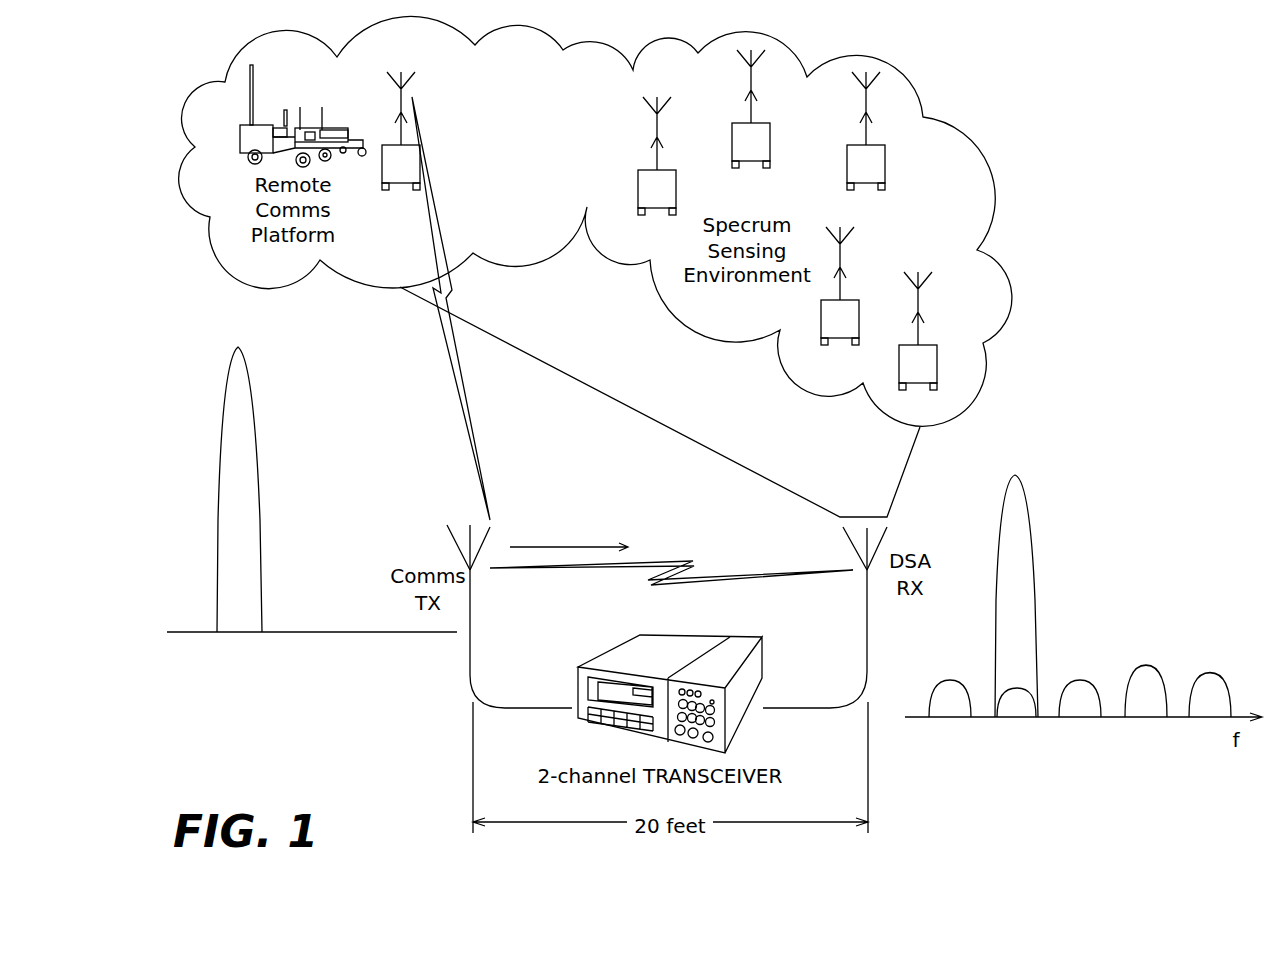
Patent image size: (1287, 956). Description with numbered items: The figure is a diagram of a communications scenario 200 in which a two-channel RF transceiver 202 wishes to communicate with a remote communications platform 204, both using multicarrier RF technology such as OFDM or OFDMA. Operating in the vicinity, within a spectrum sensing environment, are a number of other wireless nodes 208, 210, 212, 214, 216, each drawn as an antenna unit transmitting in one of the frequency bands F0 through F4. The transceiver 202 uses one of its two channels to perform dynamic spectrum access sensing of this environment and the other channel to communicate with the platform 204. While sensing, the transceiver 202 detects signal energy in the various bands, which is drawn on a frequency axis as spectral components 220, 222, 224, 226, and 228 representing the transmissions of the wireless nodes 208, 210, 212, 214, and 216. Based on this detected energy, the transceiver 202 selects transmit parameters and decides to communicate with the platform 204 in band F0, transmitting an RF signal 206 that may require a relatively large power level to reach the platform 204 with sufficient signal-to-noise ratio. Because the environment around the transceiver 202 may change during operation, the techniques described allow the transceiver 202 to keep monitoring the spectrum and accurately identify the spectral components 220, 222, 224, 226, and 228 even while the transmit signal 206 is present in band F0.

The communications scenario 200 is at (1146, 108).
The 2-channel RF transceiver 202 is at (637, 657).
The remote communications platform 204 is at (327, 125).
The RF signal 206 is at (452, 287).
The wireless node 208 is at (638, 178).
The wireless node 210 is at (732, 128).
The wireless node 212 is at (847, 167).
The wireless node 214 is at (853, 300).
The wireless node 216 is at (938, 352).
The spectral component 220 is at (945, 680).
The spectral component 222 is at (1017, 688).
The spectral component 224 is at (1073, 672).
The spectral component 226 is at (1143, 658).
The spectral component 228 is at (1208, 672).